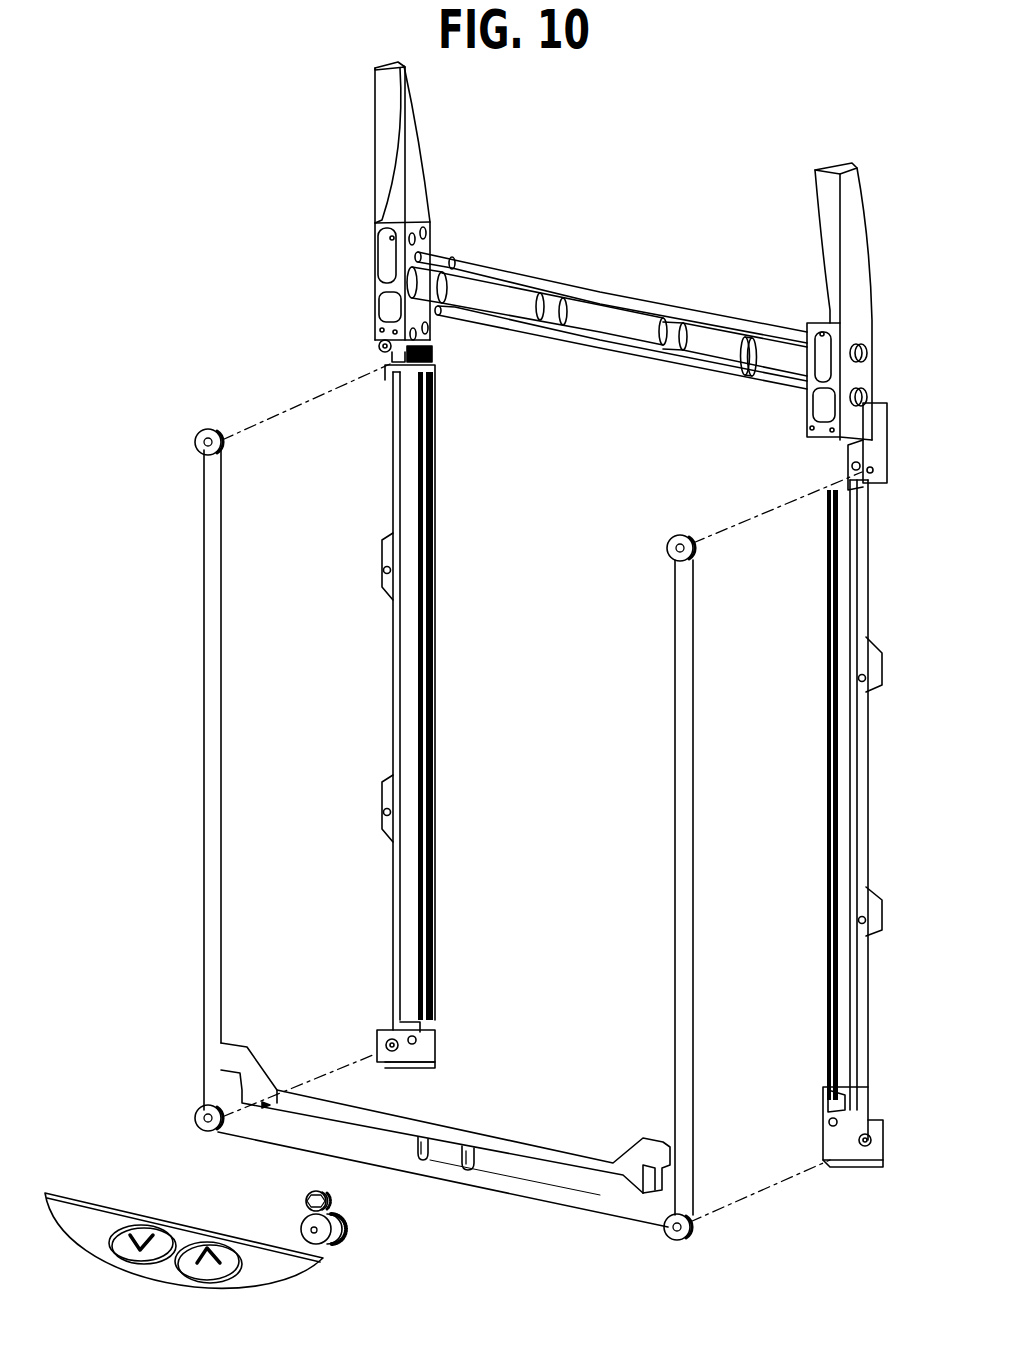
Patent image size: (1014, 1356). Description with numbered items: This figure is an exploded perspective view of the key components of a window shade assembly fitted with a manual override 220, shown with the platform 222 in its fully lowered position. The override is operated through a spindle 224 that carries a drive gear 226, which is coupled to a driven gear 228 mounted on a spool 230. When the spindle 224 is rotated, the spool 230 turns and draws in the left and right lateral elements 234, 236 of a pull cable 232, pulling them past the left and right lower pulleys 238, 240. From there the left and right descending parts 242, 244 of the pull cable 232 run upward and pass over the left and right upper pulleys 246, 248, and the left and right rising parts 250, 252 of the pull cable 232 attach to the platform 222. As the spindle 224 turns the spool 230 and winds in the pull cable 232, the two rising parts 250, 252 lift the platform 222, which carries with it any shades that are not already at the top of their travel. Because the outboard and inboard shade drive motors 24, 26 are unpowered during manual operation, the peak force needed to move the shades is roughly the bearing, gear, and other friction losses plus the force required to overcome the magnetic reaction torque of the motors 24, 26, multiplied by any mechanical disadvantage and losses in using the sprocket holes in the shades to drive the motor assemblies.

The outboard shade drive motor 24 is at (722, 355).
The inboard shade drive motor 26 is at (512, 312).
The manual override 220 is at (205, 218).
The platform 222 is at (512, 1140).
The spindle 224 is at (305, 1195).
The drive gear 226 is at (345, 1195).
The driven gear 228 is at (345, 1232).
The spool 230 is at (300, 1230).
The pull cable 232 is at (608, 1222).
The left lateral element 234 is at (368, 1165).
The right lateral element 236 is at (543, 1193).
The left lower pulley 238 is at (198, 1112).
The right lower pulley 240 is at (692, 1232).
The left descending part 242 is at (204, 818).
The right descending part 244 is at (693, 852).
The left upper pulley 246 is at (198, 430).
The right upper pulley 248 is at (688, 535).
The left rising part 250 is at (221, 812).
The right rising part 252 is at (675, 860).